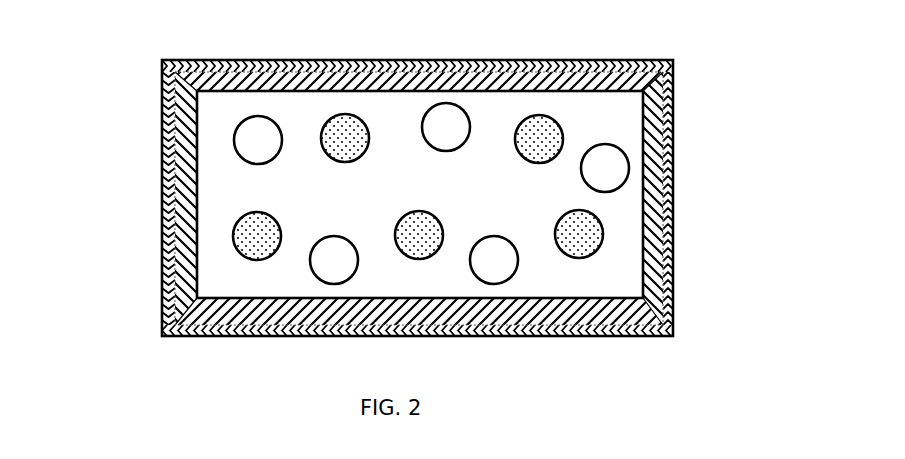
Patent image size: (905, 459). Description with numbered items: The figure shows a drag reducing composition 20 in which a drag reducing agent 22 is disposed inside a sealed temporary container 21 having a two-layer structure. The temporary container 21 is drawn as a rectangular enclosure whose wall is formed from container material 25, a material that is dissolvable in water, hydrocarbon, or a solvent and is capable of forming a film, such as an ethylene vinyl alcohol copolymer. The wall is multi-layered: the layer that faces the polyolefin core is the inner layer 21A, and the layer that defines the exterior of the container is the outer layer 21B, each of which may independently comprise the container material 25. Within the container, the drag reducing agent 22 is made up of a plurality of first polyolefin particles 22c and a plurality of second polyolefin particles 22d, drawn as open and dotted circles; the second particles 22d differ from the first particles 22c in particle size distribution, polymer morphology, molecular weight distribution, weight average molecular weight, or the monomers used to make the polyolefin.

The drag reducing composition 20 is at (118, 69).
The sealed temporary container 21 is at (787, 88).
The inner layer 21A is at (658, 100).
The outer layer 21B is at (673, 127).
The drag reducing agent 22 is at (787, 180).
The first polyolefin particles 22c is at (626, 181).
The second polyolefin particles 22d is at (603, 233).
The container material 25 is at (663, 307).